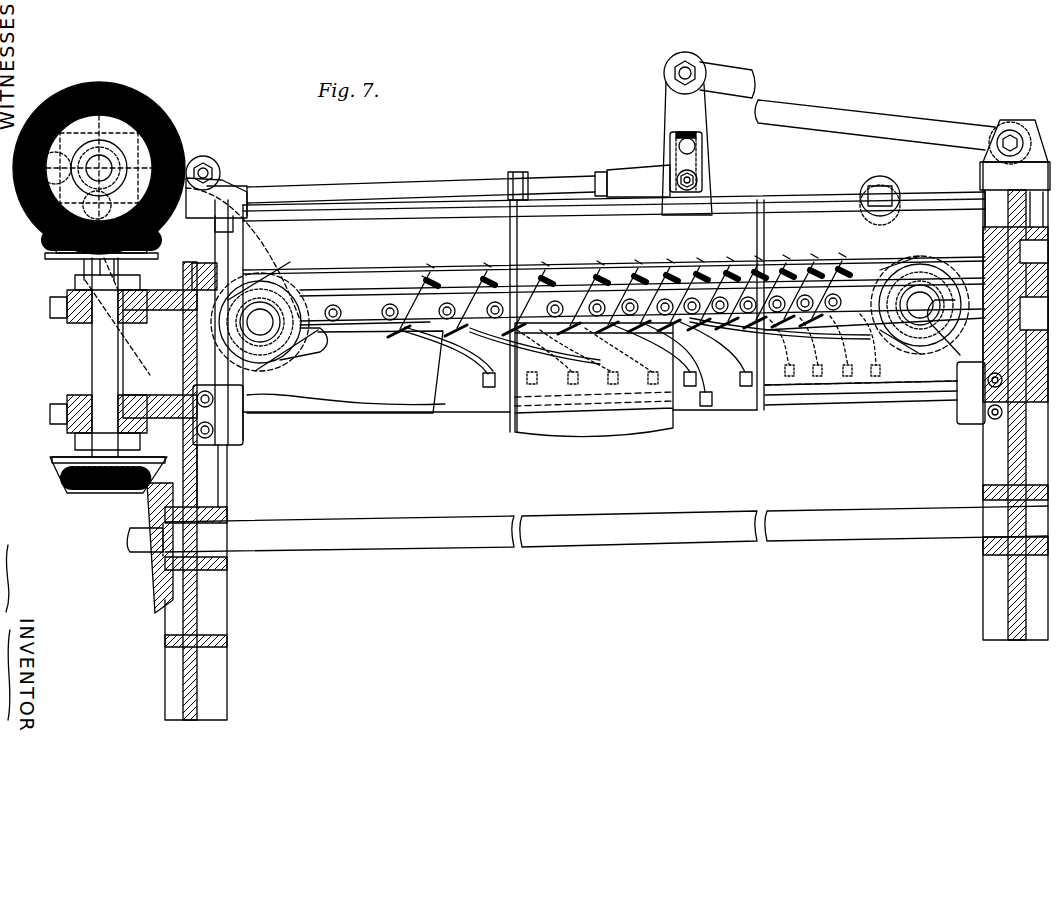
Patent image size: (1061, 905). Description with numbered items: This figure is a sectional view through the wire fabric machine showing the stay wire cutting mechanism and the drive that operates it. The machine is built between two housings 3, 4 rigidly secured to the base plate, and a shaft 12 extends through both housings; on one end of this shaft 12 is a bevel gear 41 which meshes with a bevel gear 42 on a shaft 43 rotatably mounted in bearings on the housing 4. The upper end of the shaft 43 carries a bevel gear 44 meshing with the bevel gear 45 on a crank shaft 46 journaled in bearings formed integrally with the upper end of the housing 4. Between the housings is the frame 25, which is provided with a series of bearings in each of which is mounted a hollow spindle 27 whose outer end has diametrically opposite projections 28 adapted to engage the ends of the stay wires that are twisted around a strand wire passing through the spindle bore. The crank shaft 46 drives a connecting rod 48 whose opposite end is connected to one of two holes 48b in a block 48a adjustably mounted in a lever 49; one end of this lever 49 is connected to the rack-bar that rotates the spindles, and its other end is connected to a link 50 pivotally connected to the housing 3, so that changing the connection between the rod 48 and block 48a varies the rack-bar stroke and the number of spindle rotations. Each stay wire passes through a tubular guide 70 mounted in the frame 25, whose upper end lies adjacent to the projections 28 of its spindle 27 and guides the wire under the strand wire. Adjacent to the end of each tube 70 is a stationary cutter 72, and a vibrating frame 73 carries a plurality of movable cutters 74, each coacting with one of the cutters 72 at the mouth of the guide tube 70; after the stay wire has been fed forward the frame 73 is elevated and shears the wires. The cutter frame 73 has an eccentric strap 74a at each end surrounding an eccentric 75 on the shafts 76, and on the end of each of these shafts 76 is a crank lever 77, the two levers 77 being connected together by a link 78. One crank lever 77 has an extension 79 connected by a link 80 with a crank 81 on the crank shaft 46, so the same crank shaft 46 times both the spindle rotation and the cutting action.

The housing 3 is at (995, 461).
The housing 4 is at (210, 486).
The shaft 12 is at (606, 529).
The frame 25 is at (614, 253).
The hollow spindle 27 is at (340, 311).
The projections 28 is at (523, 302).
The bevel gear 41 is at (147, 586).
The bevel gear 42 is at (98, 482).
The shaft 43 is at (100, 356).
The bevel gear 44 is at (63, 252).
The bevel gear 45 is at (150, 122).
The crank shaft 46 is at (99, 168).
The connecting rod 48 is at (413, 197).
The block 48a is at (700, 158).
The holes 48b is at (670, 147).
The lever 49 is at (672, 122).
The link 50 is at (847, 106).
The tubular guide 70 is at (476, 358).
The stationary cutter 72 is at (406, 301).
The vibrating frame 73 is at (614, 377).
The movable cutters 74 is at (500, 334).
The eccentric strap 74a is at (298, 350).
The eccentric 75 is at (294, 318).
The shafts 76 is at (590, 313).
The crank levers 77 is at (902, 204).
The link 78 is at (740, 202).
The extension 79 is at (230, 196).
The link 80 is at (190, 180).
The crank 81 is at (60, 96).